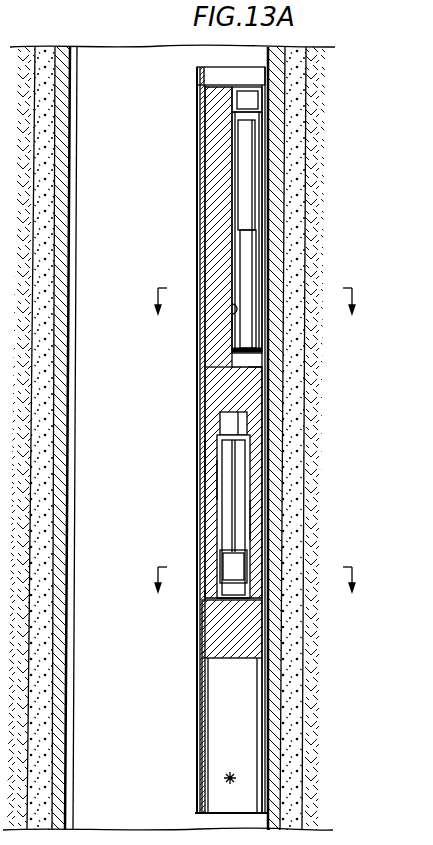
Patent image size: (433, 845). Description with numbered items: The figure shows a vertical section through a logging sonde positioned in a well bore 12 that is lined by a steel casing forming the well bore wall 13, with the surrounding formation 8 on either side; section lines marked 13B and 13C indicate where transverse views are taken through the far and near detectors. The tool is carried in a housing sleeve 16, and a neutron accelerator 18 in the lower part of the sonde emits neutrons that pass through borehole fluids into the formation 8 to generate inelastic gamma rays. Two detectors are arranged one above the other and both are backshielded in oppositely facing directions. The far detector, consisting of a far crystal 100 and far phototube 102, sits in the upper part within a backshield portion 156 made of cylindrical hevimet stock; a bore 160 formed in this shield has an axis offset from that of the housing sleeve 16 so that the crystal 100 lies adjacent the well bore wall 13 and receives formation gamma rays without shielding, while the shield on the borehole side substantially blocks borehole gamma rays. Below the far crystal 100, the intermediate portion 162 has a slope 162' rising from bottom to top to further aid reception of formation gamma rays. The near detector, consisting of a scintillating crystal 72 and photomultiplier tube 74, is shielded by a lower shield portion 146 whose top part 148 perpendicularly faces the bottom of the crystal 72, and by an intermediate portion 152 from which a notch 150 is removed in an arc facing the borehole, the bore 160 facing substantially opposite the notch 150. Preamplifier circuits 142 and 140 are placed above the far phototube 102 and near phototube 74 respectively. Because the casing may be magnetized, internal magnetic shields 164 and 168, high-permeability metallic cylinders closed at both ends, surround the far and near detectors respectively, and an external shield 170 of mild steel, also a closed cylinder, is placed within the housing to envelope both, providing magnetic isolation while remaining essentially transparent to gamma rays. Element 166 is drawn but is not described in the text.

The formation 8 is at (334, 729).
The well bore 12 is at (111, 711).
The well bore wall 13 is at (272, 255).
The housing sleeve 16 is at (196, 725).
The neutron accelerator 18 is at (237, 779).
The scintillating crystal 72 is at (228, 568).
The photomultiplier tube 74 is at (241, 487).
The far crystal 100 is at (243, 258).
The far phototube 102 is at (258, 160).
The preamplifier circuit 140 is at (228, 428).
The preamplifier circuit 142 is at (240, 98).
The lower shield portion 146 is at (243, 633).
The top part 148 is at (249, 580).
The notch 150 is at (204, 597).
The intermediate portion 152 is at (253, 525).
The backshield portion 156 is at (218, 160).
The bore 160 is at (232, 318).
The intermediate portion 162 is at (184, 383).
The slope 162' is at (307, 376).
The magnetic shield 164 is at (231, 282).
The rod 166 is at (233, 518).
The magnetic shield 168 is at (216, 478).
The external shield 170 is at (206, 460).
The section line 13B is at (255, 312).
The section line 13C is at (256, 591).